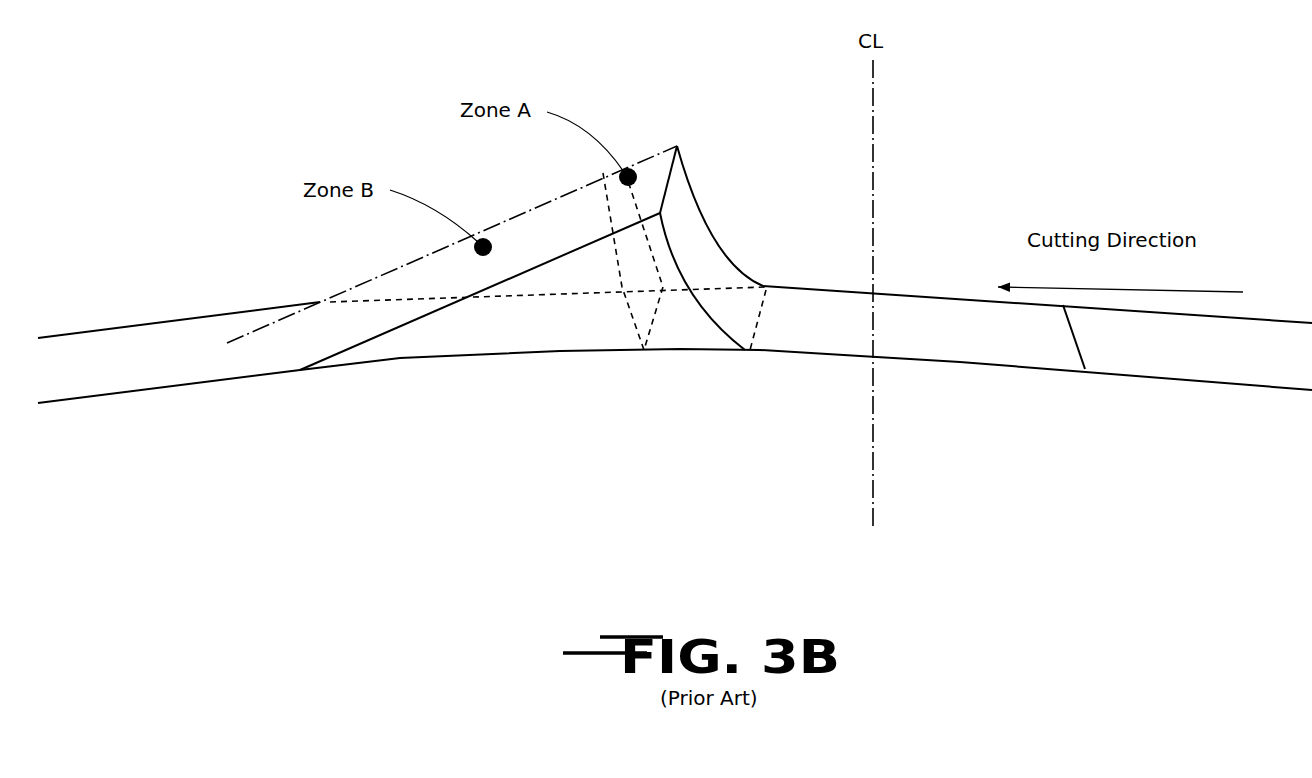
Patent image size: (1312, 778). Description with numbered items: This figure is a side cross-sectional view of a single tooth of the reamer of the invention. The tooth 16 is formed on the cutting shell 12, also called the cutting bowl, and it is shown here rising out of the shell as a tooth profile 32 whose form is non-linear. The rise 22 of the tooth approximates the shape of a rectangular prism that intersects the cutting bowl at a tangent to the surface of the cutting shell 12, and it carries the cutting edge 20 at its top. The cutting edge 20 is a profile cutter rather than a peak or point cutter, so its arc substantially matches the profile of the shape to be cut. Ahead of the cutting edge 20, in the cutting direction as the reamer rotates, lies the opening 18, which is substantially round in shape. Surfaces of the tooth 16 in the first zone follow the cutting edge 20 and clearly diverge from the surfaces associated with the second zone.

The cutting shell 12 is at (178, 358).
The cutting tooth 16 is at (657, 160).
The opening 18 is at (1012, 335).
The cutting edge 20 is at (723, 243).
The rise 22 is at (443, 280).
The tooth profile 32 is at (485, 213).